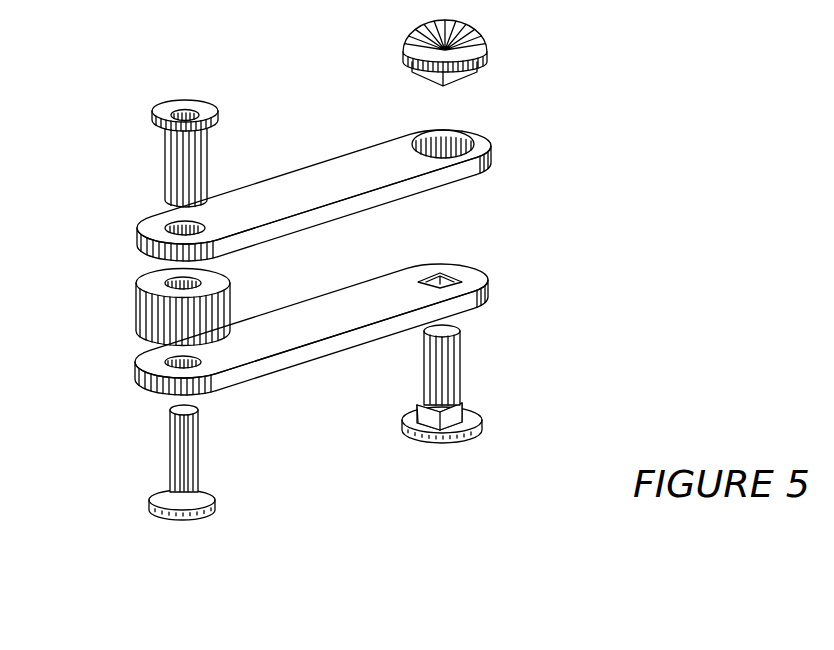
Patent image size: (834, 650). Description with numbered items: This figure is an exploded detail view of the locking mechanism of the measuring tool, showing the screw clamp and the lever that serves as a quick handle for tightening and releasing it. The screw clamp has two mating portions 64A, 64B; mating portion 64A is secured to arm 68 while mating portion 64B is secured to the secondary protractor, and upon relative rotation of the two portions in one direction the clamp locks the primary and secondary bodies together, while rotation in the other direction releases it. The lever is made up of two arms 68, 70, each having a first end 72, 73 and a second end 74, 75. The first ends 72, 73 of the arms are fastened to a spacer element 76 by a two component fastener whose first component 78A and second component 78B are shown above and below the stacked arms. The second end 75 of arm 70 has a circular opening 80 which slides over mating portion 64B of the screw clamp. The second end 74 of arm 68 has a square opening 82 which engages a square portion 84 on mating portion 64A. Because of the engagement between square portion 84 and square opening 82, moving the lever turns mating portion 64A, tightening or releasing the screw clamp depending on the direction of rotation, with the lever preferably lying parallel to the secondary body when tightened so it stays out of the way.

The mating portion of screw clamp 64A is at (452, 373).
The mating portion of screw clamp 64B is at (477, 54).
The arm 68 is at (302, 357).
The arm 70 is at (318, 187).
The first end 72 is at (136, 374).
The first end 73 is at (142, 220).
The second end 74 is at (490, 287).
The second end 75 is at (492, 152).
The spacer element 76 is at (137, 311).
The first component of fastener 78A is at (198, 468).
The second component of fastener 78B is at (180, 163).
The circular opening 80 is at (446, 122).
The square opening 82 is at (440, 278).
The square portion 84 is at (410, 70).